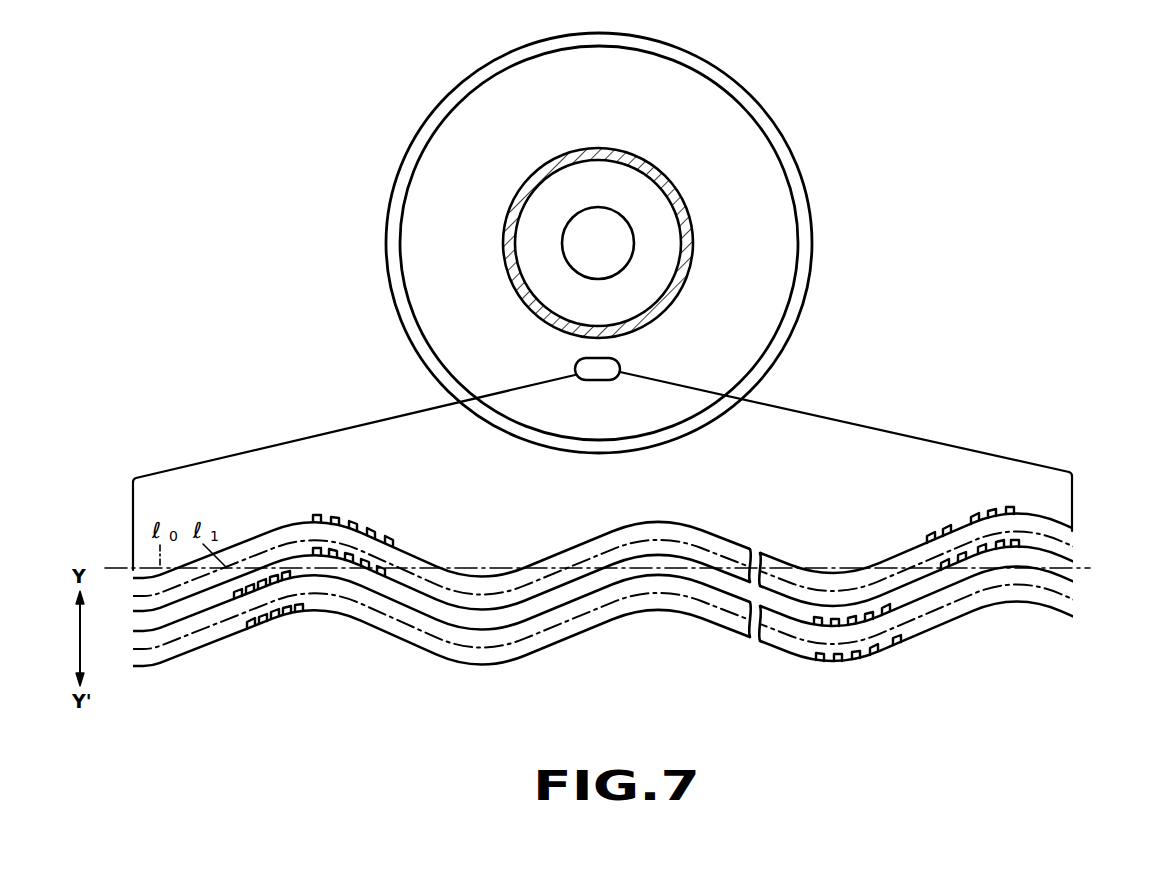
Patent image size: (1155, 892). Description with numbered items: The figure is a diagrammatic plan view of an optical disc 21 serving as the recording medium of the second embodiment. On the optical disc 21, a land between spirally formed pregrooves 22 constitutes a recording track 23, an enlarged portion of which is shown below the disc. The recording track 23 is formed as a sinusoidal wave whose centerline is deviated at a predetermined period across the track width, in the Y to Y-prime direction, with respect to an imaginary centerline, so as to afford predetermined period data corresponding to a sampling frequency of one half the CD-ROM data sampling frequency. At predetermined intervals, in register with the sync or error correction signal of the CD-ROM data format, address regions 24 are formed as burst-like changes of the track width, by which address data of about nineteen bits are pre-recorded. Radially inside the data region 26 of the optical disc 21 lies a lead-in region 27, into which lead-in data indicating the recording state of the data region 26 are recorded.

The optical disc 21 is at (812, 165).
The pregrooves 22 is at (1070, 573).
The recording track 23 is at (637, 592).
The address regions 24 is at (410, 537).
The data region 26 is at (742, 146).
The lead-in region 27 is at (693, 253).